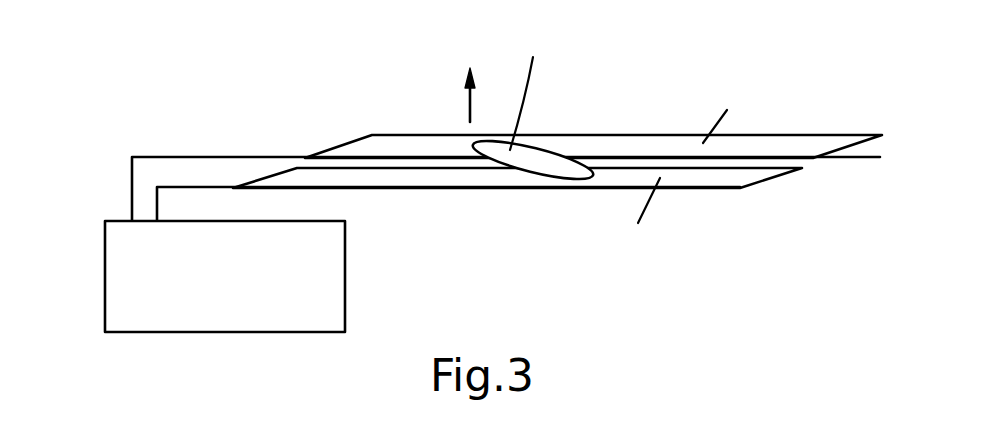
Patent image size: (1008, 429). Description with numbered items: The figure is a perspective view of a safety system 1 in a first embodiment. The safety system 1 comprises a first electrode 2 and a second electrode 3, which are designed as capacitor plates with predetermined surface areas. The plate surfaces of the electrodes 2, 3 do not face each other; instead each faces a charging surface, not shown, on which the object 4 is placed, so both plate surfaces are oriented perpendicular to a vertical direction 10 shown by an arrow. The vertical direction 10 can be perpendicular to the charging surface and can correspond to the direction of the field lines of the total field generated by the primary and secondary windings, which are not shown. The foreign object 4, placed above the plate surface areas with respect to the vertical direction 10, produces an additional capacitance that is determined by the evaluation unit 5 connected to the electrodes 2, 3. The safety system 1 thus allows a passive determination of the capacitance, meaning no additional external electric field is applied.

The safety system 1 is at (88, 293).
The first electrode 2 is at (763, 116).
The second electrode 3 is at (741, 189).
The object 4 is at (532, 148).
The evaluation unit 5 is at (345, 290).
The vertical direction 10 is at (470, 110).